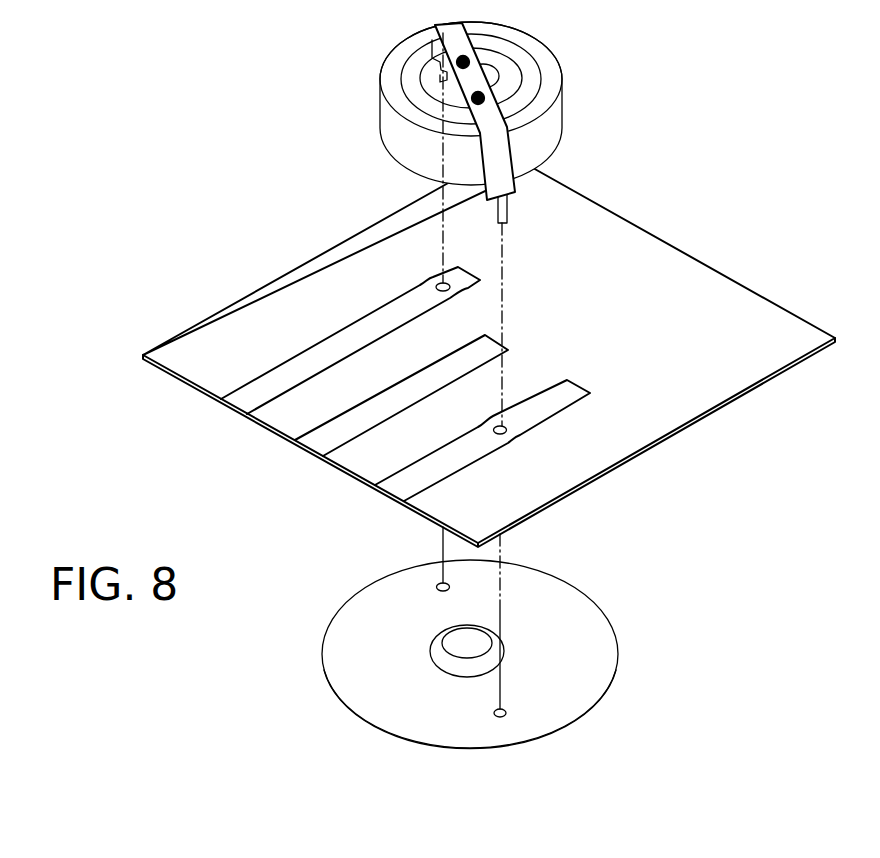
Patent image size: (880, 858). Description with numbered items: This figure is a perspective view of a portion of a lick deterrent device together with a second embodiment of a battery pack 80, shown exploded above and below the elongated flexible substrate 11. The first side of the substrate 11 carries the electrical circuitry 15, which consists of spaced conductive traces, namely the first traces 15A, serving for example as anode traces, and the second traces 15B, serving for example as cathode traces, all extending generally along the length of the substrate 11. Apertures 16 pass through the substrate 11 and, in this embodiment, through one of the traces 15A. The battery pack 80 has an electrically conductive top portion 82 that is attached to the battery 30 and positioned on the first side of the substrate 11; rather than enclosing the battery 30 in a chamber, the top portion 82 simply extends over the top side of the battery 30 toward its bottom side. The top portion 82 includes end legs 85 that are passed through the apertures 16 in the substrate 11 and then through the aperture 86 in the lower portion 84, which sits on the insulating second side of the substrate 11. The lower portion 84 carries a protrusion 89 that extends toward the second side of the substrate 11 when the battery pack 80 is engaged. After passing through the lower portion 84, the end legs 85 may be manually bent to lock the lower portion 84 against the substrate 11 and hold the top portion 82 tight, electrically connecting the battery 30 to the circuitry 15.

The elongated flexible substrate 11 is at (441, 353).
The electrical circuitry 15 is at (319, 352).
The first traces 15A is at (263, 370).
The second traces 15B is at (323, 424).
The apertures 16 is at (505, 436).
The battery 30 is at (512, 32).
The battery pack 80 is at (465, 115).
The top portion 82 is at (507, 141).
The lower portion 84 is at (455, 642).
The end legs 85 is at (508, 212).
The aperture 86 is at (507, 717).
The protrusion 89 is at (437, 666).